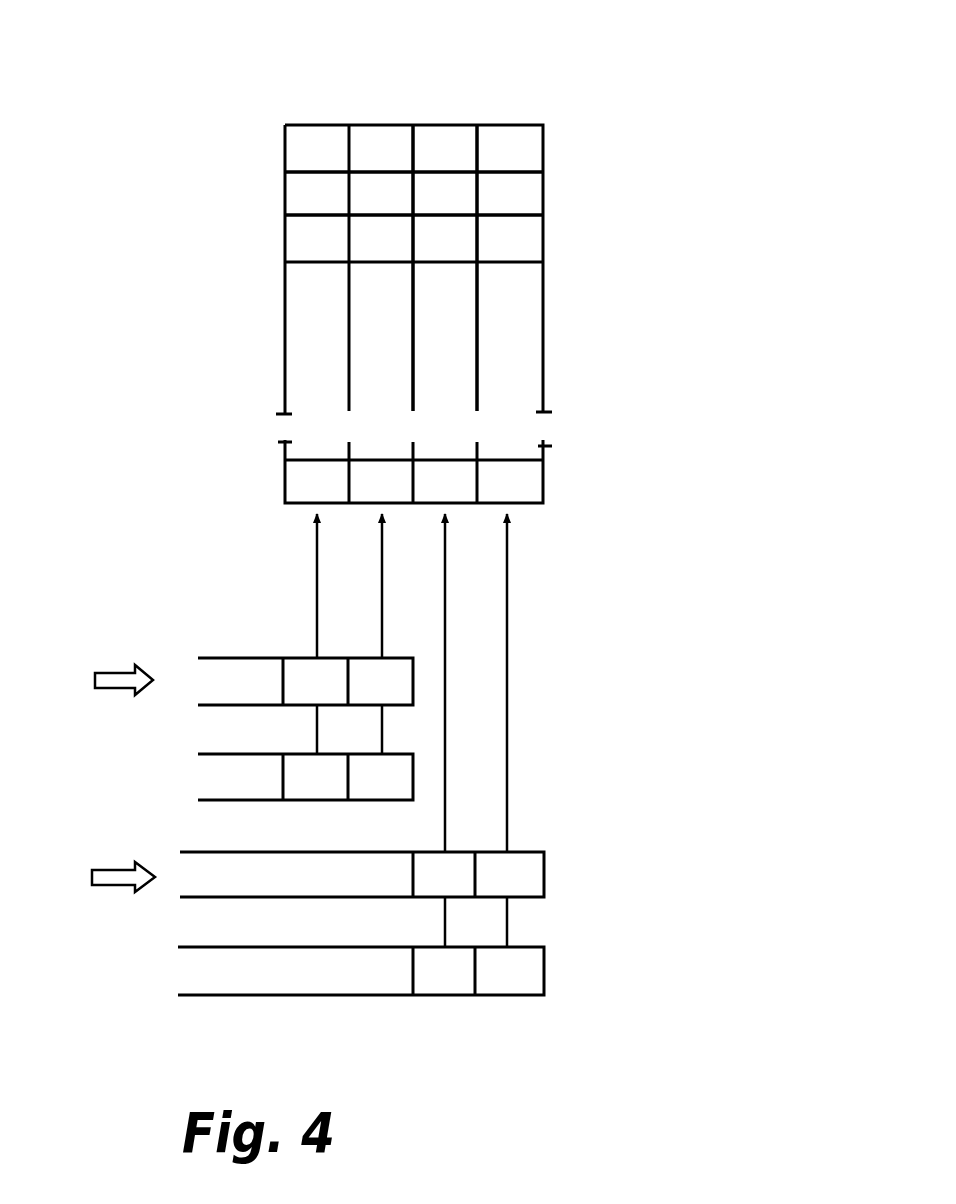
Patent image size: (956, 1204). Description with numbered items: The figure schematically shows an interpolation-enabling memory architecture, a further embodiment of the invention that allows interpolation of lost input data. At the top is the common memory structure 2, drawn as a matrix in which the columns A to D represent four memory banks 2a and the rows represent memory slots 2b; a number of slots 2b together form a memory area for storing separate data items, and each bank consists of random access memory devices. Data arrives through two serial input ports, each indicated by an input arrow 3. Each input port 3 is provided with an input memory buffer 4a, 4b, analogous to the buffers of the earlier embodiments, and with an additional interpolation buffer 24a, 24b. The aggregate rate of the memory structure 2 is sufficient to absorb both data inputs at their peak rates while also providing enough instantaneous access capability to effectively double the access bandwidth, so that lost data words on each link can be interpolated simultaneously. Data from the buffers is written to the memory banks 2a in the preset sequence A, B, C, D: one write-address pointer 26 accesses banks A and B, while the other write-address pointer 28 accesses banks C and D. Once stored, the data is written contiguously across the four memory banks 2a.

The memory structure 2 is at (566, 158).
The memory banks 2a is at (446, 92).
The memory slots 2b is at (275, 152).
The input port 3 is at (118, 690).
The input memory buffer 4a is at (218, 657).
The interpolation buffer 24a is at (240, 754).
The input memory buffer 4b is at (546, 870).
The interpolation buffer 24b is at (546, 978).
The write-address pointer 26 is at (445, 600).
The write-address pointer 28 is at (382, 576).